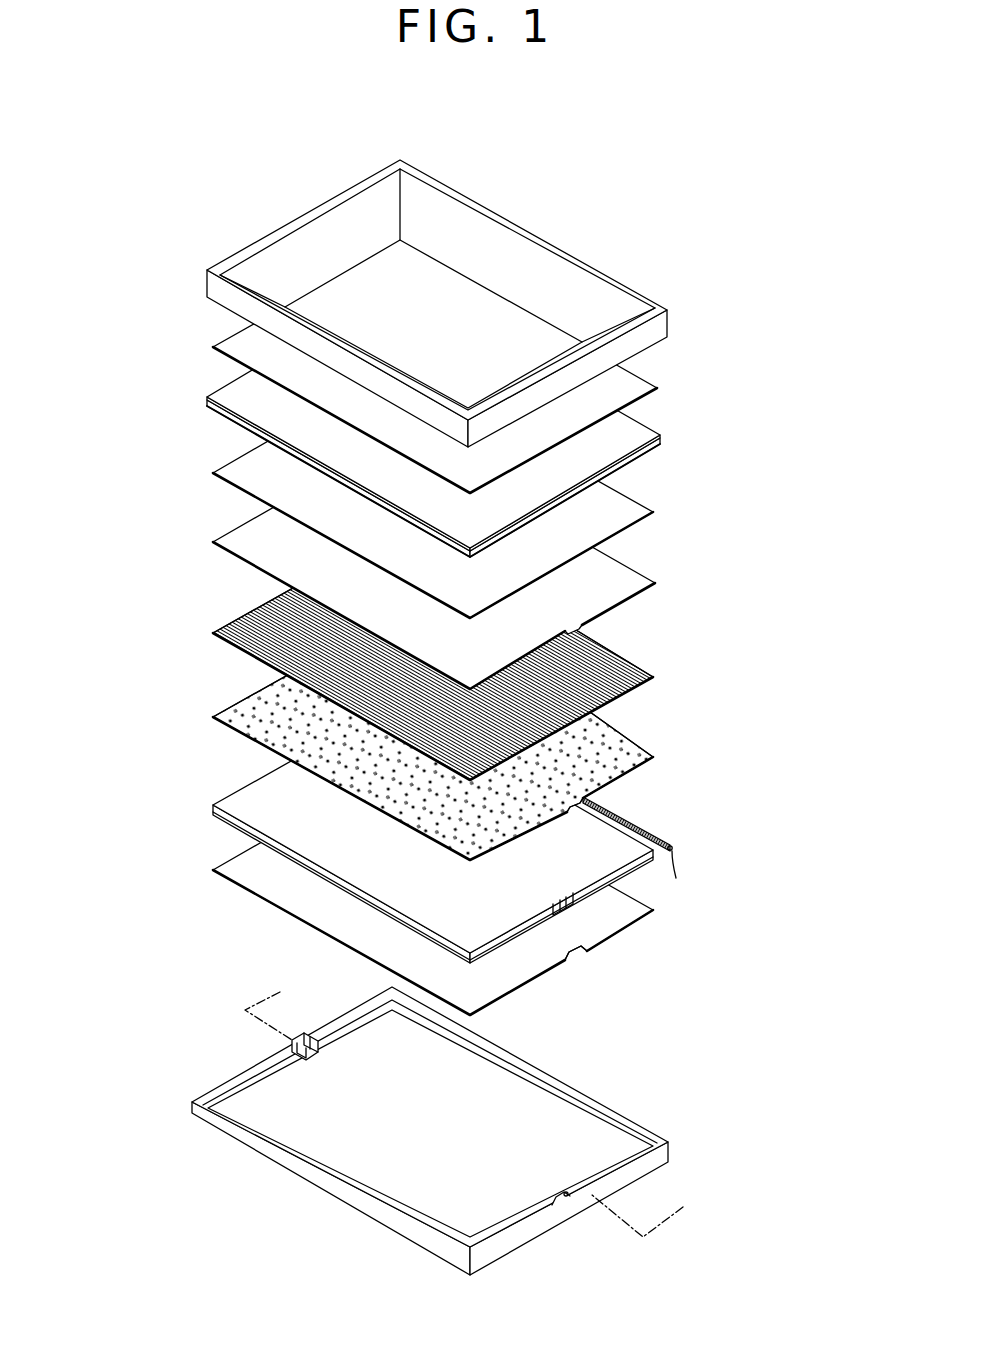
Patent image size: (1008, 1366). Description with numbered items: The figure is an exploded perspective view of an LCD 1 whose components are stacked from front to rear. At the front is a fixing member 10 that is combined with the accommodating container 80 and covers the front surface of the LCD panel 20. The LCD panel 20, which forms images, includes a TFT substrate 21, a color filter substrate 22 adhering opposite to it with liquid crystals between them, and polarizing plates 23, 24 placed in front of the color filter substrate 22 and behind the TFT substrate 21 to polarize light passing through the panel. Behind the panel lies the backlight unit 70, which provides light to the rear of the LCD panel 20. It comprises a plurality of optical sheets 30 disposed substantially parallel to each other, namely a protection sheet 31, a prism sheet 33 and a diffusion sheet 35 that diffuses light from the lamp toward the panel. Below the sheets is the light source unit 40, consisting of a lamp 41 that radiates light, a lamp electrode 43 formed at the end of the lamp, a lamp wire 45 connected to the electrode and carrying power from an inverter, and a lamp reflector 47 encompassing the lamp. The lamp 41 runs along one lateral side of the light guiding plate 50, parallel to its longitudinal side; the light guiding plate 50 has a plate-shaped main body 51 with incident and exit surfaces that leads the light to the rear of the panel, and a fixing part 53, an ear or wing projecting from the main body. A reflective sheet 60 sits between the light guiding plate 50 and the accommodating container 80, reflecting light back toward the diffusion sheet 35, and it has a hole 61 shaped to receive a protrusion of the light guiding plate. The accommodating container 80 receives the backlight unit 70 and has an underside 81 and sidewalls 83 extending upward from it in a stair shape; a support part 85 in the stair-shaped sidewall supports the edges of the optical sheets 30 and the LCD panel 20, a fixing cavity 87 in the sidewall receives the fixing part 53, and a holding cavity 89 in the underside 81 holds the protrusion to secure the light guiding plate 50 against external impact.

The LCD 1 is at (664, 246).
The fixing member 10 is at (205, 276).
The LCD panel 20 is at (355, 420).
The TFT substrate 21 is at (210, 398).
The color filter substrate 22 is at (211, 390).
The polarizing plate 23 is at (214, 338).
The polarizing plate 24 is at (218, 466).
The optical sheets 30 is at (527, 648).
The protection sheet 31 is at (503, 562).
The prism sheet 33 is at (651, 668).
The diffusion sheet 35 is at (654, 752).
The light source unit 40 is at (527, 832).
The lamp 41 is at (680, 841).
The lamp electrode 43 is at (677, 877).
The lamp wire 45 is at (617, 858).
The lamp reflector 47 is at (657, 826).
The light guiding plate 50 is at (527, 904).
The main body 51 is at (645, 862).
The fixing part 53 is at (572, 898).
The reflective sheet 60 is at (380, 894).
The hole 61 is at (578, 952).
The backlight unit 70 is at (550, 716).
The accommodating container 80 is at (381, 1123).
The underside 81 is at (257, 1117).
The sidewalls 83 is at (257, 1146).
The support part 85 is at (200, 1107).
The fixing cavity 87 is at (267, 1047).
The holding cavity 89 is at (287, 1035).